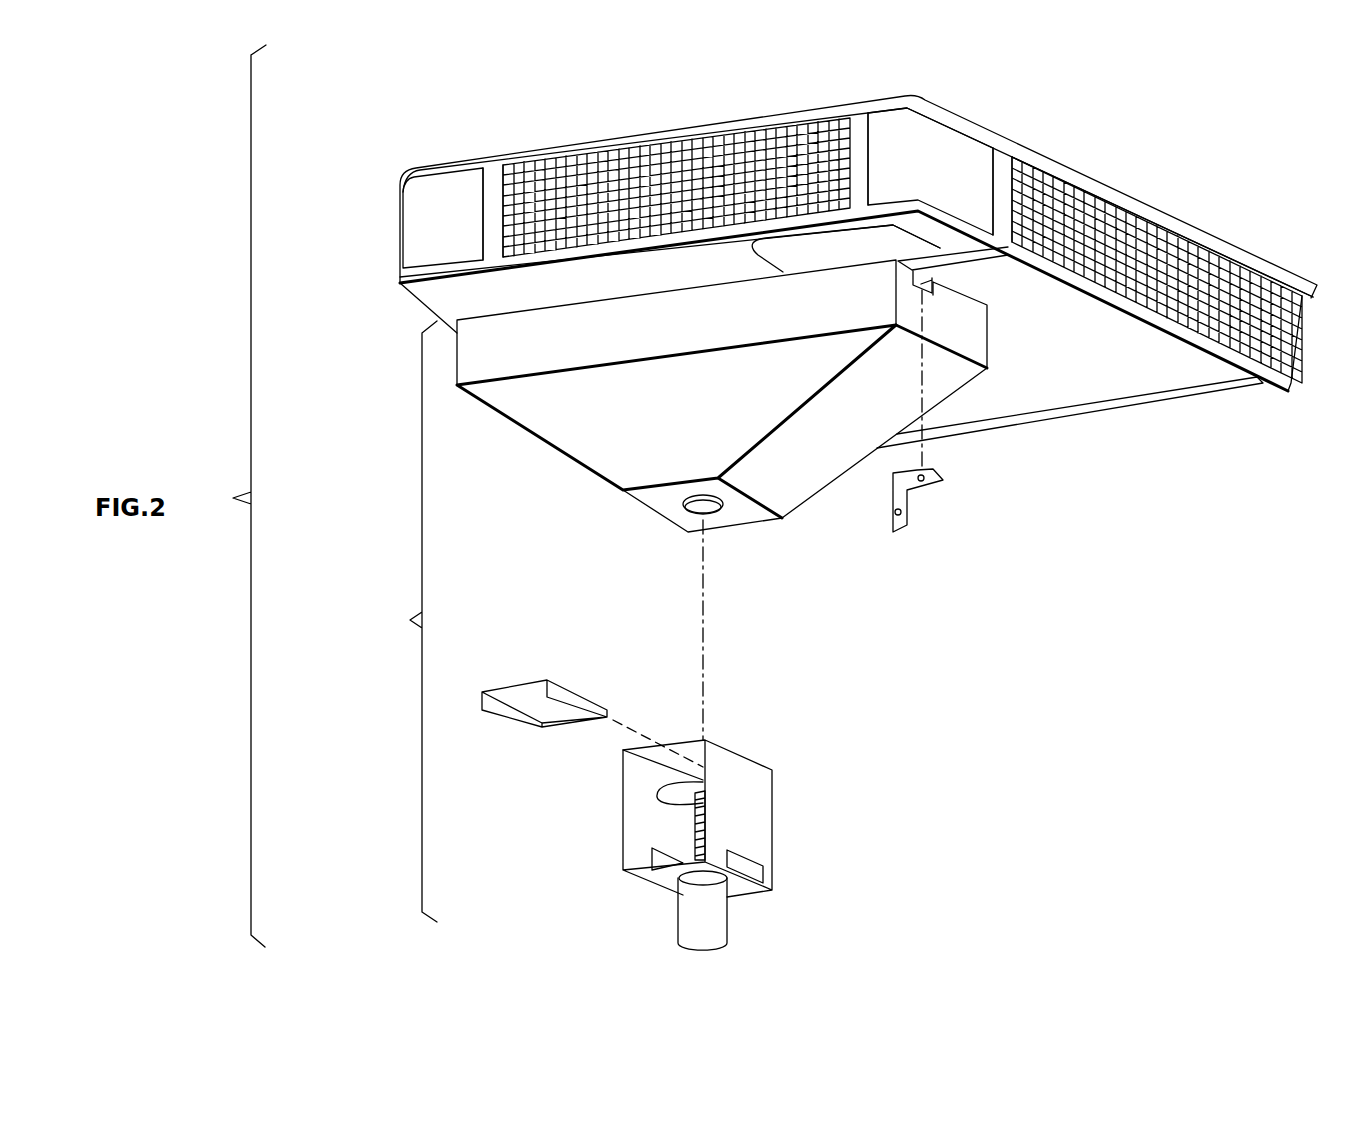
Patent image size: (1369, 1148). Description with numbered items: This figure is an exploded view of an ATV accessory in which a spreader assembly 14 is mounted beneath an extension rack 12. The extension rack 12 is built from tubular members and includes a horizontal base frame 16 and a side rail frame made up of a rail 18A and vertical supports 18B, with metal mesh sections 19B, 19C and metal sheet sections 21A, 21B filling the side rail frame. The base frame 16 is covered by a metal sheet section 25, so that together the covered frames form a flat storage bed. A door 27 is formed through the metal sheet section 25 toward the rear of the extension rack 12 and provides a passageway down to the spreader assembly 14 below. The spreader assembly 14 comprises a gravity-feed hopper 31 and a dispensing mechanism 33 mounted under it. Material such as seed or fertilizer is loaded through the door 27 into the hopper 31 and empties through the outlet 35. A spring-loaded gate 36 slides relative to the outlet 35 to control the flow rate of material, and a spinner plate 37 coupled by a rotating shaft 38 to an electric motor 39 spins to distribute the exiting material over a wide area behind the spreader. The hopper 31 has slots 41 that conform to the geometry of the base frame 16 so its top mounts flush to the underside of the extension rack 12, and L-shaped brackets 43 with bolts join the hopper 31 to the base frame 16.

The extension rack 12 is at (1133, 197).
The spreader assembly 14 is at (410, 620).
The base frame 16 is at (412, 277).
The rail 18A is at (1077, 178).
The vertical supports 18B is at (493, 187).
The metal mesh section 19B is at (717, 170).
The metal mesh section 19C is at (1240, 278).
The metal sheet section 21A is at (937, 140).
The metal sheet section 21B is at (437, 193).
The metal sheet section 25 is at (657, 289).
The door 27 is at (833, 250).
The gravity-feed hopper 31 is at (557, 450).
The dispensing mechanism 33 is at (747, 760).
The outlet 35 is at (708, 508).
The spring-loaded gate 36 is at (573, 690).
The spinner plate 37 is at (670, 797).
The rotating shaft 38 is at (687, 828).
The electric motor 39 is at (715, 917).
The slots 41 is at (970, 298).
The L-shaped brackets 43 is at (900, 498).